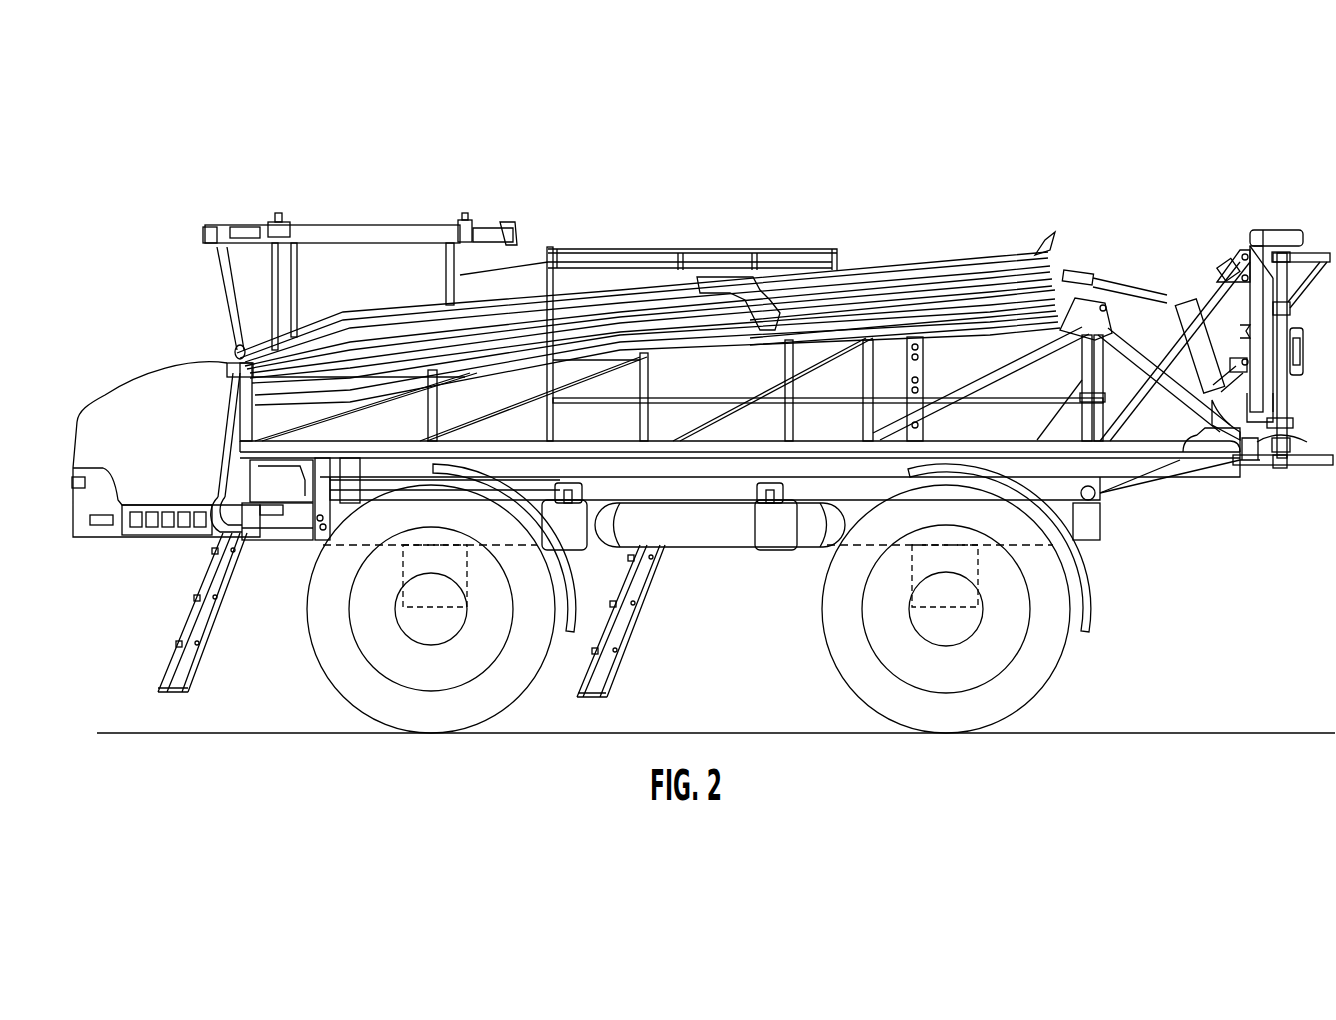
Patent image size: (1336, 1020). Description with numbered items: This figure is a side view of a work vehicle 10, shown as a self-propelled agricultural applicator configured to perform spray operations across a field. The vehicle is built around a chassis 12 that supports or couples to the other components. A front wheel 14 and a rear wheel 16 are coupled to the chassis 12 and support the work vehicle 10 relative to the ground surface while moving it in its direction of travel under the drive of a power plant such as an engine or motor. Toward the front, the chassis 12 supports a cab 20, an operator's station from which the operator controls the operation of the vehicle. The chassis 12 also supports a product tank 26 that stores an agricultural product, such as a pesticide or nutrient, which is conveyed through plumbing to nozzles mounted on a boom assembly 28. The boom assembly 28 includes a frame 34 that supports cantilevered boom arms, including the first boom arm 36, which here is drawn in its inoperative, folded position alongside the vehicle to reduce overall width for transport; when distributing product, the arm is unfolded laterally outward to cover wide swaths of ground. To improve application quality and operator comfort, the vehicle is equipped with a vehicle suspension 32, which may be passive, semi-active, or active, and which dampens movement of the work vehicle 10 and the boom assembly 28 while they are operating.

The work vehicle 10 is at (1096, 176).
The chassis 12 is at (700, 530).
The front wheel 14 is at (513, 672).
The rear wheel 16 is at (1022, 682).
The cab 20 is at (357, 223).
The product tank 26 is at (583, 283).
The boom assembly 28 is at (921, 224).
The vehicle suspension 32 is at (403, 573).
The frame 34 is at (1296, 230).
The first boom arm 36 is at (880, 250).